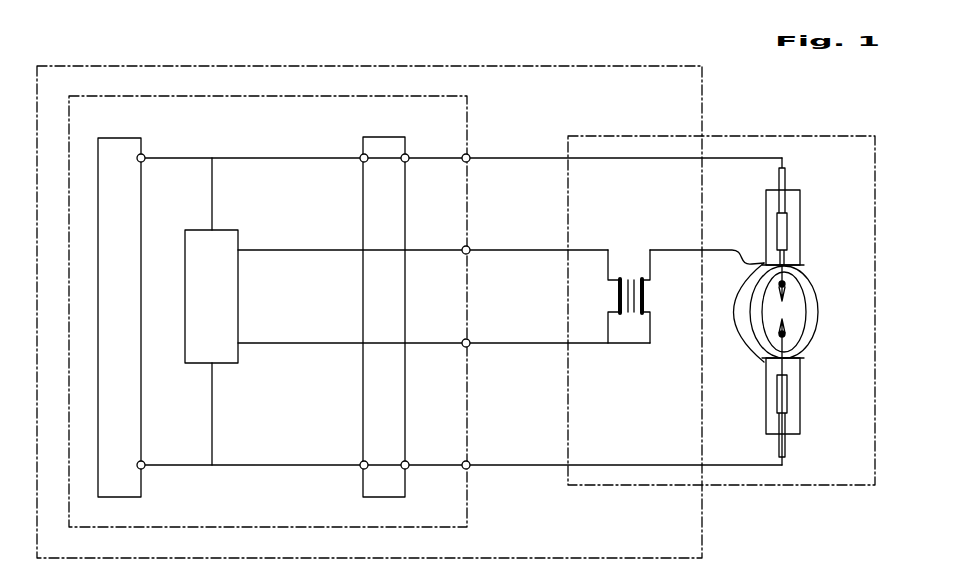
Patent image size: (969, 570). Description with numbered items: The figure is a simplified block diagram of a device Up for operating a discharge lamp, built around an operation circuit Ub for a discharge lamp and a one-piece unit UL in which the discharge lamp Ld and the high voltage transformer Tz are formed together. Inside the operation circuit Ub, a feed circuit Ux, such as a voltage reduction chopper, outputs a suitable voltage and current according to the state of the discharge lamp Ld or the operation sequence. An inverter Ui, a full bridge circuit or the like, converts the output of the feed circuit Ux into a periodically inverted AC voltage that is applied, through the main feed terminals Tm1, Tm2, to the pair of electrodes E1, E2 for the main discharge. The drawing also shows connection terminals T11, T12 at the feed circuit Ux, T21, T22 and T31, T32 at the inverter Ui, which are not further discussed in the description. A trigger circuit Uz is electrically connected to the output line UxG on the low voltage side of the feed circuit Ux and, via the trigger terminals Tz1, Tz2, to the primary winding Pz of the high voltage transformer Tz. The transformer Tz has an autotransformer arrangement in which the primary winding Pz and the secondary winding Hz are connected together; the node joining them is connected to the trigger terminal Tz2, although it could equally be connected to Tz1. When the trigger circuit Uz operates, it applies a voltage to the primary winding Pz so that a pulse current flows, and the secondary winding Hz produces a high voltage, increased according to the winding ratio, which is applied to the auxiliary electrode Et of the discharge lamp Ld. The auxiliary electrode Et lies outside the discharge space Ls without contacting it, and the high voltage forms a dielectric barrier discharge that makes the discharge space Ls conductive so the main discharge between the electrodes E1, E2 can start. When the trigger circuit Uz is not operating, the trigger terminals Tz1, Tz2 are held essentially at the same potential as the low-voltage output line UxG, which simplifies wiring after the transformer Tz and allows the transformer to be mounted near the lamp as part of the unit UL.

The device for operating a discharge lamp Up is at (703, 549).
The operation circuit for a discharge lamp Ub is at (468, 521).
The one-piece unit UL is at (851, 486).
The feed circuit Ux is at (119, 317).
The inverter Ui is at (384, 317).
The trigger circuit Uz is at (211, 296).
The output line on the low voltage side of the feed circuit UxG is at (247, 466).
The terminal T11 is at (144, 155).
The terminal T12 is at (145, 468).
The terminal T21 is at (361, 155).
The terminal T22 is at (360, 468).
The terminal T31 is at (409, 155).
The terminal T32 is at (409, 468).
The main feed terminal Tm1 is at (469, 161).
The main feed terminal Tm2 is at (469, 462).
The trigger terminal Tz1 is at (469, 253).
The trigger terminal Tz2 is at (469, 346).
The high voltage transformer Tz is at (629, 292).
The primary winding Pz is at (616, 291).
The secondary winding Hz is at (645, 292).
The discharge lamp Ld is at (766, 232).
The discharge space Ls is at (792, 312).
The electrode for the main discharge E1 is at (785, 290).
The electrode for the main discharge E2 is at (789, 330).
The auxiliary electrode Et is at (755, 353).